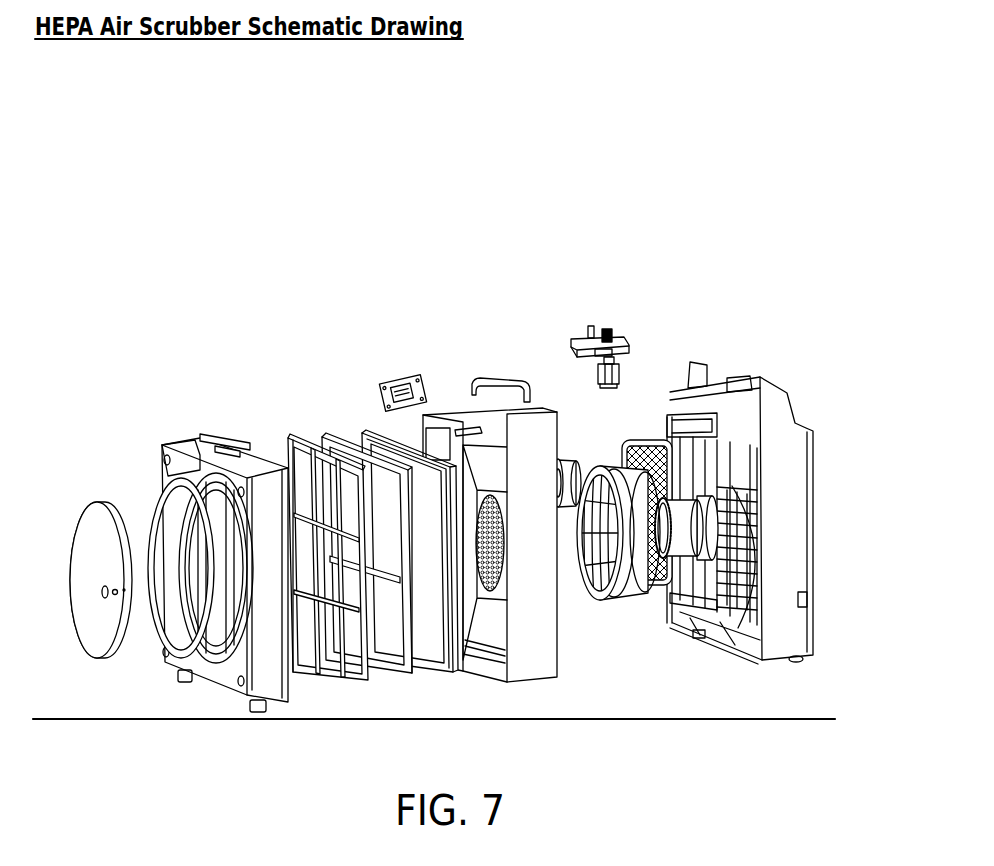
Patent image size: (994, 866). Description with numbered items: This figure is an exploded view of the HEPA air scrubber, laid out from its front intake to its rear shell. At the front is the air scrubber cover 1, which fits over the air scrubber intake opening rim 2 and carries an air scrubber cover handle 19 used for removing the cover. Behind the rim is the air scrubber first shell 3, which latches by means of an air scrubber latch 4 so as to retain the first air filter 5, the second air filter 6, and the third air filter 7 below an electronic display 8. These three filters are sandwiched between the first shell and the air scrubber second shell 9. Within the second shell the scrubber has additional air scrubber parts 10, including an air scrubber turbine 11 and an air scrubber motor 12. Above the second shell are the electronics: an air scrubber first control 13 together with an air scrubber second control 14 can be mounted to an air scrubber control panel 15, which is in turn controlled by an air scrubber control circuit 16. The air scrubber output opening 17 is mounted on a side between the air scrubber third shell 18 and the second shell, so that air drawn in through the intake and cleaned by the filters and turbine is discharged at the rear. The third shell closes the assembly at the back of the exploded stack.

The air scrubber cover 1 is at (97, 510).
The air scrubber intake opening rim 2 is at (155, 508).
The air scrubber first shell 3 is at (188, 445).
The air scrubber latch 4 is at (237, 438).
The first air filter 5 is at (295, 438).
The second air filter 6 is at (337, 437).
The third air filter 7 is at (375, 433).
The electronic display 8 is at (402, 382).
The air scrubber second shell 9 is at (450, 409).
The air scrubber part 10 is at (570, 460).
The air scrubber turbine 11 is at (605, 467).
The air scrubber motor 12 is at (667, 545).
The air scrubber first control 13 is at (589, 324).
The air scrubber second control 14 is at (605, 327).
The air scrubber control panel 15 is at (620, 340).
The air scrubber control circuit 16 is at (597, 372).
The air scrubber output opening 17 is at (646, 440).
The air scrubber third shell 18 is at (740, 377).
The air scrubber cover handle 19 is at (107, 600).